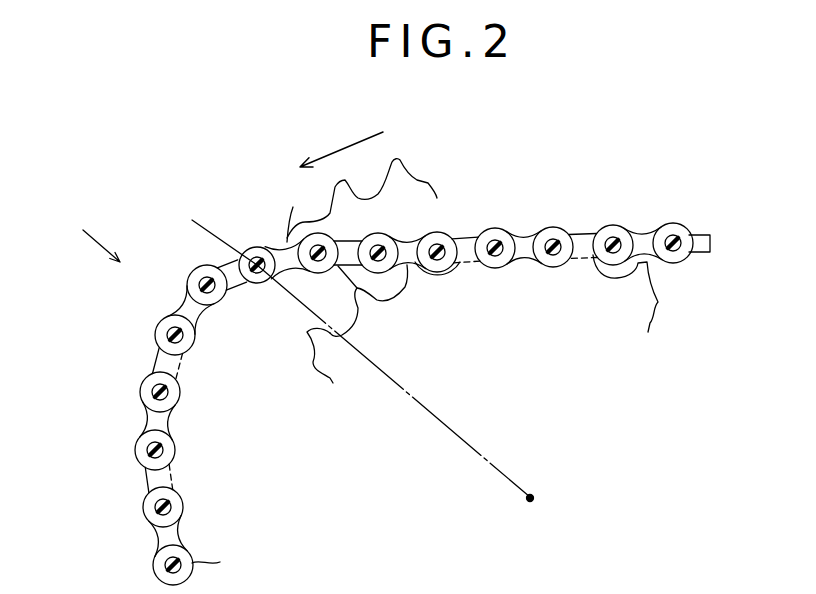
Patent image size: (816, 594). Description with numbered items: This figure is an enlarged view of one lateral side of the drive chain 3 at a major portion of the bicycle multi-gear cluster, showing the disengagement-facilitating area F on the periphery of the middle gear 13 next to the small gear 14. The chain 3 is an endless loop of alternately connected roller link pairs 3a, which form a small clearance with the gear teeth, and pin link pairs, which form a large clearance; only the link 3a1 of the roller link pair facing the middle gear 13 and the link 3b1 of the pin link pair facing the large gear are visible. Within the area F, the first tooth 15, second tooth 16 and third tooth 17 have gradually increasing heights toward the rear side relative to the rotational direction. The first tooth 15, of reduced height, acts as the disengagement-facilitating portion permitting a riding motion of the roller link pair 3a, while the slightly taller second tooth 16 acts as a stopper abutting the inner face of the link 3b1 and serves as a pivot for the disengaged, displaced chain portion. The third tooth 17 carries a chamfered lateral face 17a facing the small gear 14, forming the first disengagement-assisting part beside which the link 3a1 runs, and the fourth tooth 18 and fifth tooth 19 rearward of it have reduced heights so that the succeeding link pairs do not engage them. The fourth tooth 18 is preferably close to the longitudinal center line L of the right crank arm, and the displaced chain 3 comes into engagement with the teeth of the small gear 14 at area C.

The drive chain 3 is at (375, 369).
The roller link pair 3a is at (180, 447).
The link of roller link pair 3a1 is at (188, 343).
The link of pin link pair 3b1 is at (183, 383).
The middle gear 13 is at (428, 156).
The small gear 14 is at (670, 292).
The first tooth 15 is at (147, 420).
The second tooth 16 is at (158, 357).
The third tooth 17 is at (212, 312).
The chamfered lateral face 17a is at (172, 318).
The fourth tooth 18 is at (246, 252).
The fifth tooth 19 is at (283, 232).
The area C is at (525, 220).
The longitudinal center line of the right crank arm L is at (352, 346).
The disengagement-facilitating area F is at (88, 235).